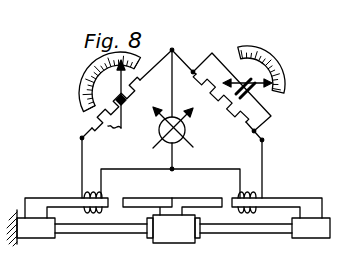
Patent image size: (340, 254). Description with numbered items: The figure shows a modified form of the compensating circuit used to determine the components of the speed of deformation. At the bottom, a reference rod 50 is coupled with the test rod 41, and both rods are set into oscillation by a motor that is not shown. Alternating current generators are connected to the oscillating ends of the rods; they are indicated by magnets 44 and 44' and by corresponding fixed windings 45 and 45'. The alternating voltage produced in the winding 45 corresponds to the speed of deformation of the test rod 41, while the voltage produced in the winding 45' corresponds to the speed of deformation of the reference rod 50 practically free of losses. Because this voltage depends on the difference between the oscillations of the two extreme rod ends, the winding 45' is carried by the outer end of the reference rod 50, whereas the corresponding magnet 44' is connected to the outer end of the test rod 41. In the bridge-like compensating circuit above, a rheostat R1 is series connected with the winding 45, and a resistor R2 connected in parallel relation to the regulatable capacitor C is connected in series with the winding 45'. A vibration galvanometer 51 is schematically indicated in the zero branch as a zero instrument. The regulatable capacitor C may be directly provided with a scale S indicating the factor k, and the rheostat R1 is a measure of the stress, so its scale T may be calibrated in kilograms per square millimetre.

The scale T is at (79, 94).
The scale S is at (268, 58).
The regulatable capacitor C is at (258, 96).
The rheostat R1 is at (116, 112).
The resistor R2 is at (221, 101).
The vibration galvanometer 51 is at (184, 135).
The fixed winding 45 is at (74, 188).
The fixed winding 45' is at (264, 191).
The magnet 44 is at (147, 196).
The magnet 44' is at (198, 196).
The test rod 41 is at (92, 225).
The reference rod 50 is at (234, 223).